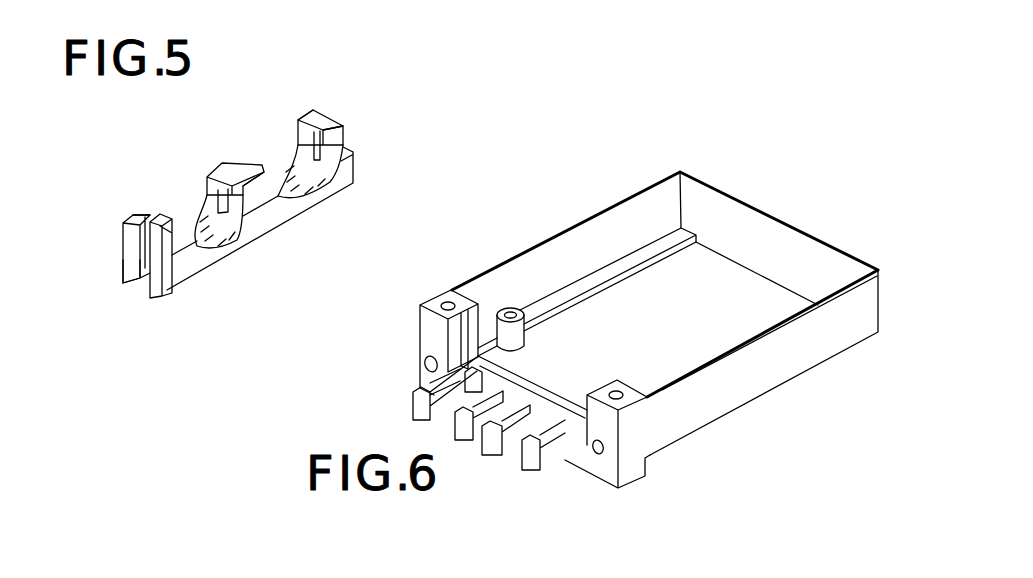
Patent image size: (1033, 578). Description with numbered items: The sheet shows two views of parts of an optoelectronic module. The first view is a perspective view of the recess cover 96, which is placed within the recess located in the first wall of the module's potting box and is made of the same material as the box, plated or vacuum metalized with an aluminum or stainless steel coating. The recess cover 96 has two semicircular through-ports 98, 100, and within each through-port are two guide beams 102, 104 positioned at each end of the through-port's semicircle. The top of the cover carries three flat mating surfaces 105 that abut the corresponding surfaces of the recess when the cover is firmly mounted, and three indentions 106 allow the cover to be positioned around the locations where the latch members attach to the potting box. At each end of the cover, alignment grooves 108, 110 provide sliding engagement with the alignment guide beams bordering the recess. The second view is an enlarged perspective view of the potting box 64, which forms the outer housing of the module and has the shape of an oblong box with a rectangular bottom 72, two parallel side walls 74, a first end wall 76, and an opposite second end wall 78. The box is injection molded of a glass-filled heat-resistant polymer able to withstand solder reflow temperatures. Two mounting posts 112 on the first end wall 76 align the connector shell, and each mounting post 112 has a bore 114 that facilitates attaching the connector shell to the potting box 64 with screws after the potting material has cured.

In FIG. 6, the potting box 64 is at (665, 313).
In FIG. 6, the rectangular bottom 72 is at (716, 307).
In FIG. 6, the side walls 74 is at (631, 243).
In FIG. 6, the first end wall 76 is at (612, 472).
In FIG. 6, the second end wall 78 is at (778, 249).
In FIG. 5, the recess cover 96 is at (109, 273).
In FIG. 5, the semicircular through-port 98 is at (198, 238).
In FIG. 5, the semicircular through-port 100 is at (295, 158).
In FIG. 5, the guide beam 102 is at (262, 163).
In FIG. 5, the guide beam 104 is at (206, 185).
In FIG. 5, the flat mating surfaces 105 is at (311, 112).
In FIG. 5, the indentions 106 is at (352, 152).
In FIG. 5, the alignment groove 108 is at (331, 121).
In FIG. 5, the alignment groove 110 is at (128, 281).
In FIG. 6, the mounting post 112 is at (528, 427).
In FIG. 6, the bore 114 is at (427, 365).